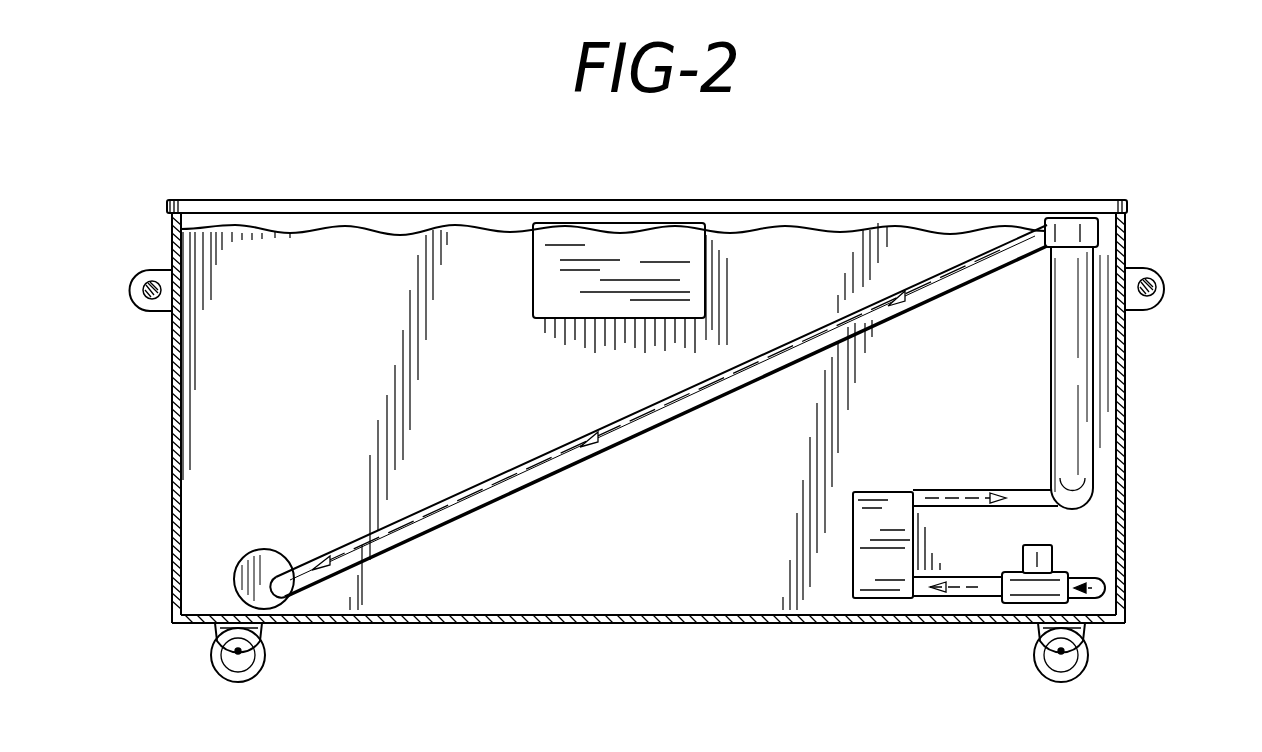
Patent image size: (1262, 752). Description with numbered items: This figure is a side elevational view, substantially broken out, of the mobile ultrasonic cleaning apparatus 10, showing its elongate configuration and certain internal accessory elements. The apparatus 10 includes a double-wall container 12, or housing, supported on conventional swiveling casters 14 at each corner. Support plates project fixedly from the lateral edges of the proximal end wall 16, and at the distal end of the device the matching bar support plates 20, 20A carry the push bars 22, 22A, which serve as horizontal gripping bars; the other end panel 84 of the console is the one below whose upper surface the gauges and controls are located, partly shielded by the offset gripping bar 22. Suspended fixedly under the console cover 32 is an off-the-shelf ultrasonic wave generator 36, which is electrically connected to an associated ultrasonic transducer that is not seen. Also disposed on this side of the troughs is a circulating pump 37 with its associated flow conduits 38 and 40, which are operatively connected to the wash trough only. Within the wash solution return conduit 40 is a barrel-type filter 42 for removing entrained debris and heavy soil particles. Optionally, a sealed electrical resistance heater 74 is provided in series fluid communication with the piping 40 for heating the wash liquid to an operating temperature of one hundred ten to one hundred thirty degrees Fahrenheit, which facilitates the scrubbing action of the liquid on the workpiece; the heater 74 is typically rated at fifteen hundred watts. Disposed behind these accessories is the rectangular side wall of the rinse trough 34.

The mobile ultrasonic cleaning apparatus 10 is at (644, 400).
The double-wall container 12 is at (642, 418).
The casters 14 is at (215, 675).
The proximal end wall 16 is at (1125, 410).
The bar support plate 20 is at (1184, 262).
The push bar 22 is at (1160, 290).
The bar support plate 20A is at (108, 293).
The push bar 22A is at (145, 305).
The console cover 32 is at (410, 200).
The rinse trough 34 is at (250, 450).
The ultrasonic wave generator 36 is at (690, 253).
The circulating pump 37 is at (855, 560).
The flow conduit 38 is at (1105, 590).
The wash solution return conduit 40 is at (1040, 506).
The barrel-type filter 42 is at (1073, 368).
The sealed electrical resistance heater 74 is at (240, 577).
The end panel 84 is at (172, 402).